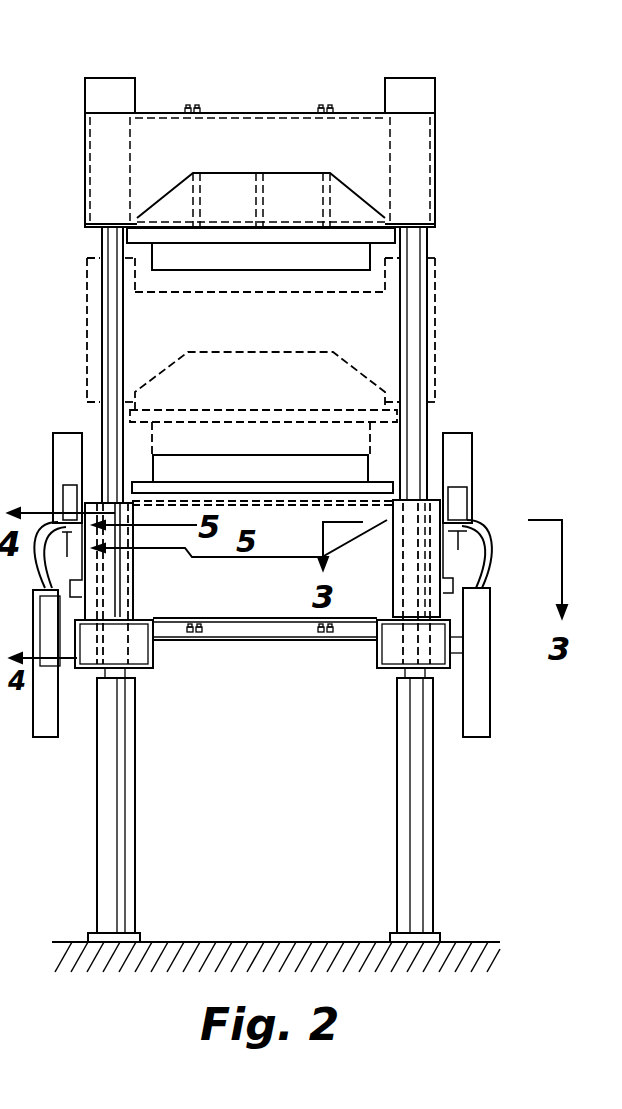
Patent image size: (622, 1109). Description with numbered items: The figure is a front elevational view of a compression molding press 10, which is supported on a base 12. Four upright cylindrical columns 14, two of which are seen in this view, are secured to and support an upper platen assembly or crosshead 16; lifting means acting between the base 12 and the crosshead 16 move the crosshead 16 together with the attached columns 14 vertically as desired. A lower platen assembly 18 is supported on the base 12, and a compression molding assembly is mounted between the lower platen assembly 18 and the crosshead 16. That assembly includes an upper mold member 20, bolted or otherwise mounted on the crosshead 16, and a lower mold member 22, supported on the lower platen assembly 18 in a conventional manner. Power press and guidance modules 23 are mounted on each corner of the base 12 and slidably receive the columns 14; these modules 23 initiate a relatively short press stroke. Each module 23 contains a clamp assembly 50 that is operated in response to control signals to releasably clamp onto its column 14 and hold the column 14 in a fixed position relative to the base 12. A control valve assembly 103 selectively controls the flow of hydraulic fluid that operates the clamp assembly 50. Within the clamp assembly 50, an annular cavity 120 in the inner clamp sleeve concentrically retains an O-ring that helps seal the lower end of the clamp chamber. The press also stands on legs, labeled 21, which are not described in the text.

The compression molding press 10 is at (447, 103).
The base 12 is at (490, 491).
The upright cylindrical columns 14 is at (410, 298).
The upper platen assembly or crosshead 16 is at (268, 98).
The lower platen assembly 18 is at (388, 468).
The upper mold member 20 is at (352, 254).
The legs 21 is at (115, 880).
The lower mold member 22 is at (168, 470).
The power press and guidance modules 23 is at (490, 455).
The clamp assembly 50 is at (427, 567).
The control valve assembly 103 is at (480, 512).
The annular cavity 120 is at (477, 600).